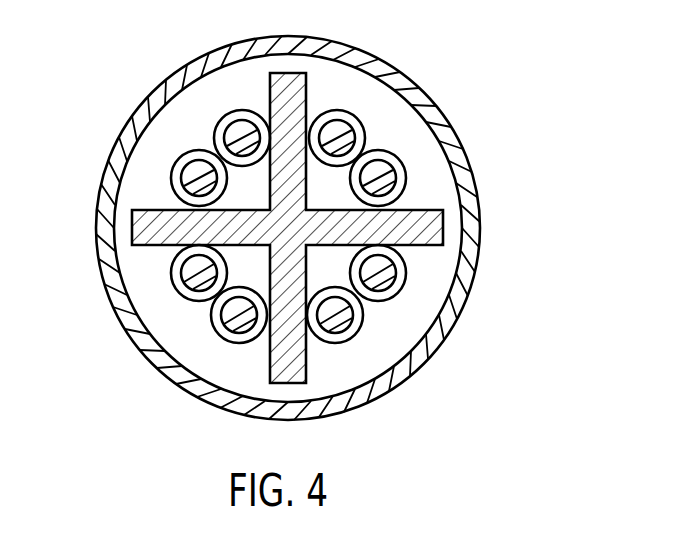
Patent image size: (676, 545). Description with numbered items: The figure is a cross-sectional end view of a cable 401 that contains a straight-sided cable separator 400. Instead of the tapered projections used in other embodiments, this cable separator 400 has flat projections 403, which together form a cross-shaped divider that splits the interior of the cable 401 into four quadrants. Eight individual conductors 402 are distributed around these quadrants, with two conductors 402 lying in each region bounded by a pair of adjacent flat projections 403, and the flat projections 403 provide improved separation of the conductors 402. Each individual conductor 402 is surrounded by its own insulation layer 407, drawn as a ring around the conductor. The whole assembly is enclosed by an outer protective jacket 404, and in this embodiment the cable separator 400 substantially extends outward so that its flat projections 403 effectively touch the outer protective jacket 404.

The cable separator 400 is at (445, 209).
The cable 401 is at (519, 48).
The conductors 402 is at (190, 168).
The flat projections 403 is at (290, 73).
The outer protective jacket 404 is at (190, 70).
The insulation layer 407 is at (322, 120).